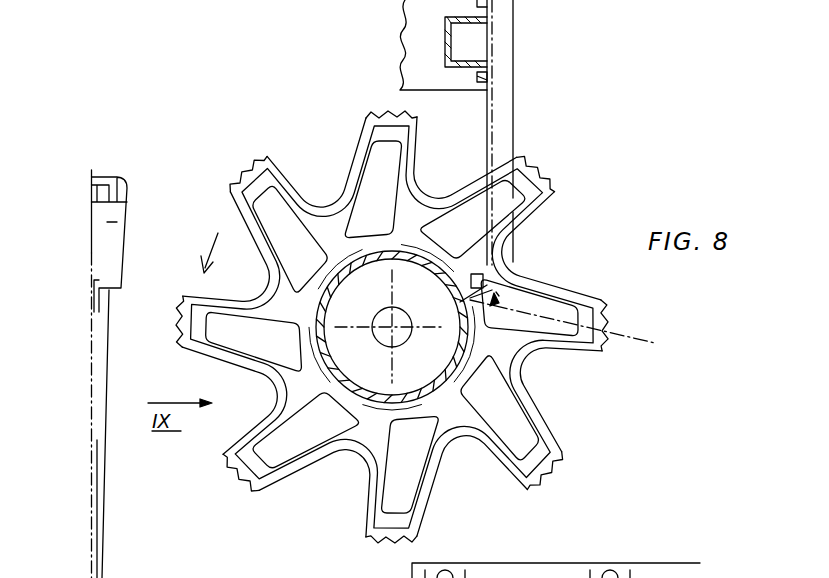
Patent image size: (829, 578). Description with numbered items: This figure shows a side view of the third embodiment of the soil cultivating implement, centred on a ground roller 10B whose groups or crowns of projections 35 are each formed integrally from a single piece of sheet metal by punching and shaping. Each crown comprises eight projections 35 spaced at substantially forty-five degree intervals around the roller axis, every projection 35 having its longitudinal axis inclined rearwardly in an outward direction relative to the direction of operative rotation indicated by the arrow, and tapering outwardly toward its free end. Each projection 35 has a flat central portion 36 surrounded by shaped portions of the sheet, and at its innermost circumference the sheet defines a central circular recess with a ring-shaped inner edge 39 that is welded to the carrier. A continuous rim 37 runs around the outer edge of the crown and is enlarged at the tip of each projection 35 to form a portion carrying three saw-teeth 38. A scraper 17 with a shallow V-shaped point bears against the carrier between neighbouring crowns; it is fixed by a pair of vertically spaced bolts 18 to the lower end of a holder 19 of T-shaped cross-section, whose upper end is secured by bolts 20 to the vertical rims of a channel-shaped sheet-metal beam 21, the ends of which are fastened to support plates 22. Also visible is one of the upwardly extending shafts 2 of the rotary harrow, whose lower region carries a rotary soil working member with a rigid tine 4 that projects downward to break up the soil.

The shaft 2 is at (397, 331).
The tine 4 is at (103, 500).
The ground roller 10B is at (314, 147).
The scraper 17 is at (557, 308).
The bolt 18 is at (473, 219).
The holder 19 is at (515, 103).
The bolt 20 is at (483, 76).
The beam 21 is at (447, 55).
The support plate 22 is at (400, 22).
The projection 35 is at (429, 143).
The flat central portion 36 is at (263, 363).
The rim 37 is at (548, 439).
The saw-tooth 38 is at (540, 182).
The ring-shaped inner edge 39 is at (352, 416).